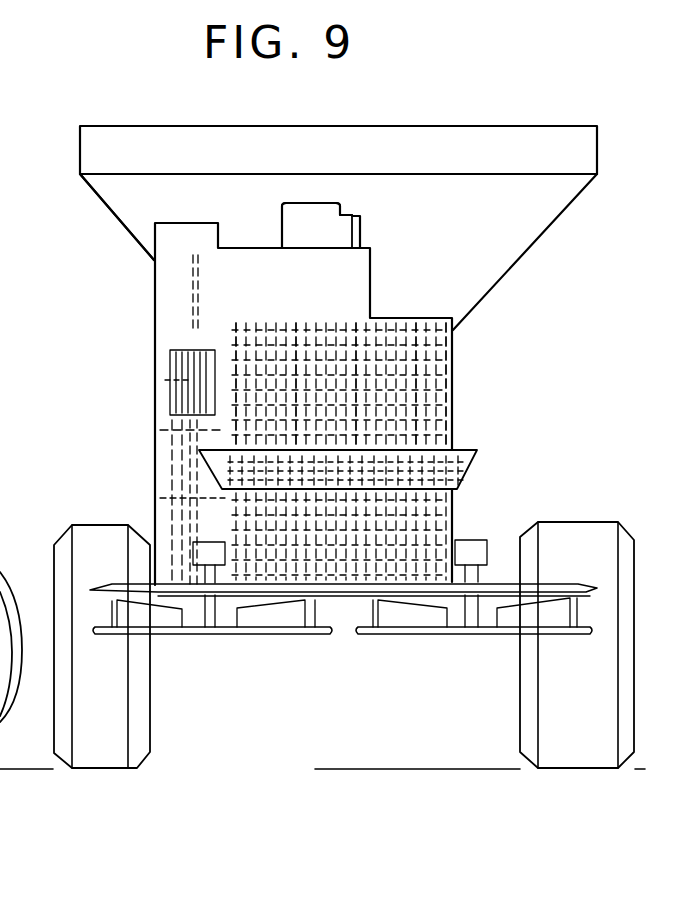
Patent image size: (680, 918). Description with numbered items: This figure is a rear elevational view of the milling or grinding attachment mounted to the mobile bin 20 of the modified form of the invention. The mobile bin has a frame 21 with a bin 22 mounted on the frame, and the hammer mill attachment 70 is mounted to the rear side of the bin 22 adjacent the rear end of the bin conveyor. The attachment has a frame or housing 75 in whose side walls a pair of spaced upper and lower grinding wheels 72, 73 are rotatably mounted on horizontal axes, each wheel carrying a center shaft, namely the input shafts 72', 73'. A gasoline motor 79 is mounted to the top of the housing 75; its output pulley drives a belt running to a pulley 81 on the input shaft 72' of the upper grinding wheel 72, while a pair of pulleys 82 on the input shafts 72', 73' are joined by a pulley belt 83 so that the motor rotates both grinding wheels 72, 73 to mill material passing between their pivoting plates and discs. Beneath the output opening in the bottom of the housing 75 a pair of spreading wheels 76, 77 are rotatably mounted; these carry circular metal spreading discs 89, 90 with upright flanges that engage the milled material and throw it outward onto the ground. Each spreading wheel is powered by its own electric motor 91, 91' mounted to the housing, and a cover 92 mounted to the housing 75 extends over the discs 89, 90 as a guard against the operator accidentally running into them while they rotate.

The mobile bin 20 is at (548, 238).
The frame 21 is at (108, 213).
The bin 22 is at (19, 512).
The hammer mill attachment 70 is at (455, 406).
The upper grinding wheel 72 is at (392, 384).
The input shaft 72' is at (139, 330).
The lower grinding wheel 73 is at (359, 515).
The input shaft 73' is at (153, 502).
The housing 75 is at (405, 318).
The spreading wheel 76 is at (420, 637).
The spreading wheel 77 is at (205, 637).
The gasoline motor 79 is at (290, 226).
The pulley 81 is at (195, 340).
The pulley 82 is at (143, 358).
The pulley belt 83 is at (150, 428).
The spreading disc 89 is at (267, 637).
The spreading disc 90 is at (458, 637).
The electric motor 91 is at (157, 560).
The electric motor 91' is at (536, 531).
The cover 92 is at (92, 588).